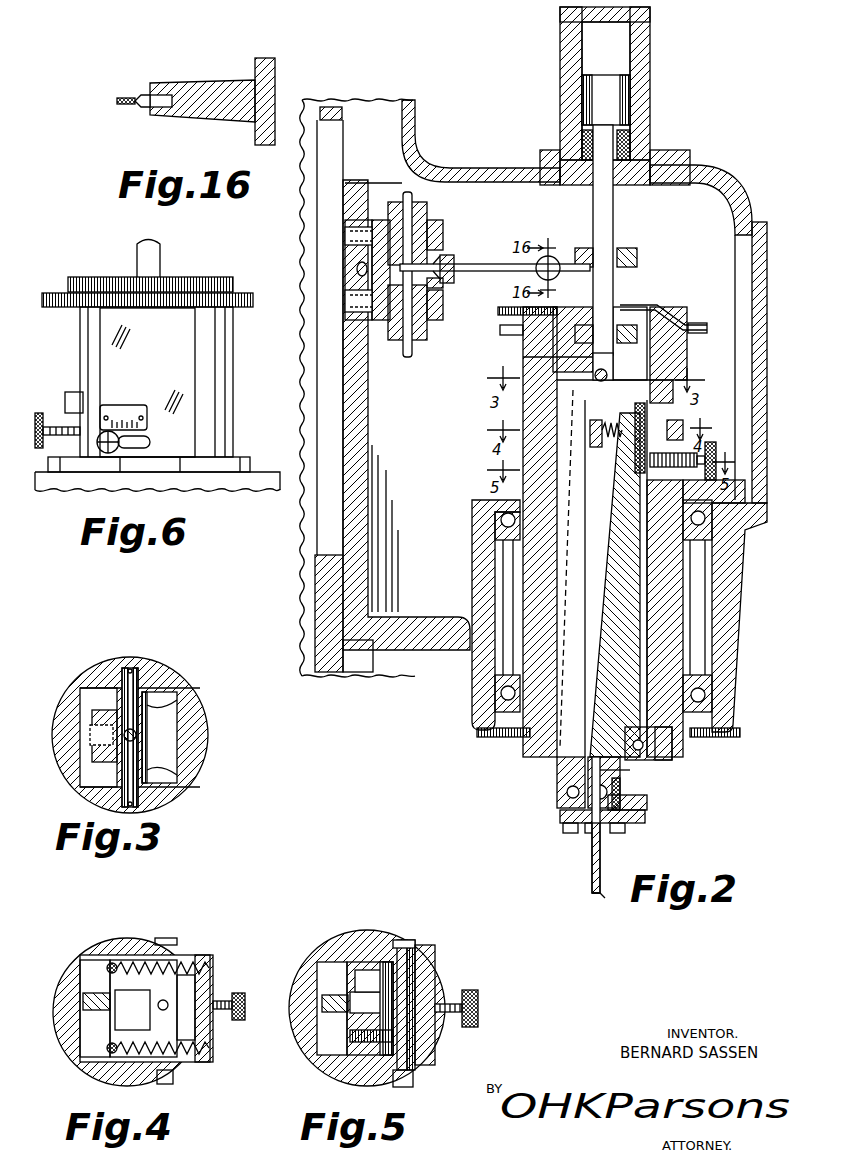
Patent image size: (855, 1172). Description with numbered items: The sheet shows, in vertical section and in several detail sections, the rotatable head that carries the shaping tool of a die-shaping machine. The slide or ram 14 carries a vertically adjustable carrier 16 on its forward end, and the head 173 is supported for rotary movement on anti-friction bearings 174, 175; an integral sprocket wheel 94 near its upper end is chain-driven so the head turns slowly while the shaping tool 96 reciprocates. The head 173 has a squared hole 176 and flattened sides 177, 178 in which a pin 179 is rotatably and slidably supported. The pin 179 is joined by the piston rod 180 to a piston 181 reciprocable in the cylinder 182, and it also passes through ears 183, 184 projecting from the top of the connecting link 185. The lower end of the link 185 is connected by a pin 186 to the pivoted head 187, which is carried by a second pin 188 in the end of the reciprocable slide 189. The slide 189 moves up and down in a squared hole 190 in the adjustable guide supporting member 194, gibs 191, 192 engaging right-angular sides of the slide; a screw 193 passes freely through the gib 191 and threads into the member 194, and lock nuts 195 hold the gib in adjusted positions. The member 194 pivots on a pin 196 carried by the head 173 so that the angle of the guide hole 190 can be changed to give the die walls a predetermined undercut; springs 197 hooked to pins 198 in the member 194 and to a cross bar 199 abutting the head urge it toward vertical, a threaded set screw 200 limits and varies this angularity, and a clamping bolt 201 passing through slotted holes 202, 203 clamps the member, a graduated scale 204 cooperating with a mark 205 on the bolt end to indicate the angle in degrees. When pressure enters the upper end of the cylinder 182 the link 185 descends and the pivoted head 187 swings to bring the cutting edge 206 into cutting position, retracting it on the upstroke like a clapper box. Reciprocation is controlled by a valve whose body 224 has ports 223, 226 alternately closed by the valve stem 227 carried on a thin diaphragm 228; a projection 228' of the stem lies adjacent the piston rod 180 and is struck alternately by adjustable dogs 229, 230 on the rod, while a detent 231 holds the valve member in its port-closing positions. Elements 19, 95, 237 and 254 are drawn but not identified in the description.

In FIG. 2, the slide or ram 14 is at (328, 672).
In FIG. 2, the vertically adjustable carrier 16 is at (417, 642).
In FIG. 2, the member 19 is at (620, 778).
In FIG. 2, the sprocket wheel 94 is at (689, 328).
In FIG. 6, the sprocket wheel 94 is at (248, 306).
In FIG. 2, the hub 95 is at (530, 352).
In FIG. 6, the hub 95 is at (210, 333).
In FIG. 2, the shaping tool 96 is at (592, 885).
In FIG. 2, the head 173 is at (540, 482).
In FIG. 3, the head 173 is at (62, 700).
In FIG. 5, the head 173 is at (310, 960).
In FIG. 2, the anti-friction bearing 174 is at (501, 522).
In FIG. 2, the anti-friction bearing 175 is at (501, 694).
In FIG. 3, the squared hole 176 is at (165, 690).
In FIG. 3, the flattened side 177 is at (108, 672).
In FIG. 3, the flattened side 178 is at (160, 808).
In FIG. 2, the pin 179 is at (613, 378).
In FIG. 3, the pin 179 is at (136, 668).
In FIG. 2, the piston rod 180 is at (606, 216).
In FIG. 6, the piston rod 180 is at (160, 263).
In FIG. 3, the piston rod 180 is at (168, 722).
In FIG. 2, the piston 181 is at (606, 103).
In FIG. 2, the cylinder 182 is at (645, 50).
In FIG. 3, the ear 183 is at (160, 703).
In FIG. 3, the ear 184 is at (172, 770).
In FIG. 2, the connecting link 185 is at (520, 638).
In FIG. 3, the connecting link 185 is at (92, 735).
In FIG. 4, the connecting link 185 is at (83, 1003).
In FIG. 5, the connecting link 185 is at (322, 1003).
In FIG. 2, the pin 186 is at (567, 793).
In FIG. 2, the pivoted head 187 is at (560, 818).
In FIG. 2, the second pin 188 is at (608, 792).
In FIG. 2, the reciprocable slide 189 is at (615, 774).
In FIG. 5, the reciprocable slide 189 is at (360, 965).
In FIG. 5, the squared hole 190 is at (368, 965).
In FIG. 2, the gib 191 is at (645, 745).
In FIG. 5, the gib 191 is at (400, 940).
In FIG. 5, the gib 192 is at (355, 1055).
In FIG. 2, the screw 193 is at (640, 403).
In FIG. 2, the adjustable guide supporting member 194 is at (637, 630).
In FIG. 4, the adjustable guide supporting member 194 is at (128, 960).
In FIG. 5, the adjustable guide supporting member 194 is at (382, 960).
In FIG. 2, the lock nuts 195 is at (684, 421).
In FIG. 2, the pin 196 is at (662, 760).
In FIG. 4, the springs 197 is at (145, 965).
In FIG. 4, the pins 198 is at (112, 962).
In FIG. 4, the cross bar 199 is at (210, 990).
In FIG. 2, the threaded set screw 200 is at (710, 442).
In FIG. 5, the threaded set screw 200 is at (466, 992).
In FIG. 6, the clamping bolt 201 is at (125, 452).
In FIG. 5, the clamping bolt 201 is at (420, 960).
In FIG. 5, the slotted hole 202 is at (407, 942).
In FIG. 5, the slotted hole 203 is at (380, 1065).
In FIG. 6, the graduated scale 204 is at (100, 412).
In FIG. 6, the mark 205 is at (100, 452).
In FIG. 2, the cutting edge 206 is at (601, 895).
In FIG. 2, the port 223 is at (372, 282).
In FIG. 2, the valve body 224 is at (430, 228).
In FIG. 2, the port 226 is at (452, 266).
In FIG. 2, the valve stem 227 is at (442, 290).
In FIG. 2, the thin diaphragm 228 is at (495, 246).
In FIG. 2, the projection 228' is at (494, 287).
In FIG. 16, the projection 228' is at (99, 113).
In FIG. 2, the adjustable dog 229 is at (630, 251).
In FIG. 2, the adjustable dog 230 is at (624, 326).
In FIG. 2, the detent 231 is at (551, 258).
In FIG. 16, the detent 231 is at (143, 97).
In FIG. 2, the screw 237 is at (357, 268).
In FIG. 2, the cover 254 is at (668, 311).
In FIG. 6, the cover 254 is at (225, 281).